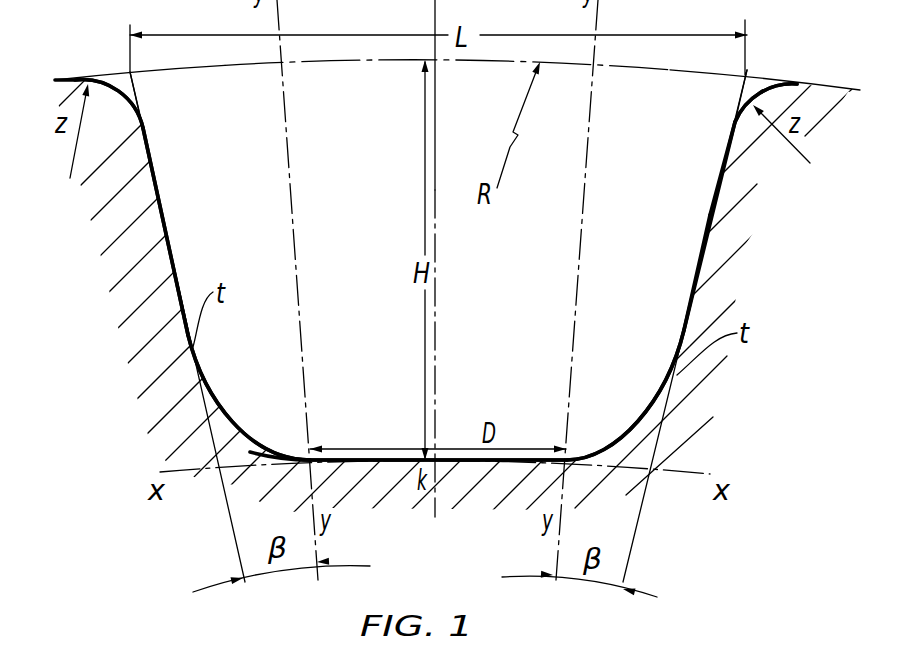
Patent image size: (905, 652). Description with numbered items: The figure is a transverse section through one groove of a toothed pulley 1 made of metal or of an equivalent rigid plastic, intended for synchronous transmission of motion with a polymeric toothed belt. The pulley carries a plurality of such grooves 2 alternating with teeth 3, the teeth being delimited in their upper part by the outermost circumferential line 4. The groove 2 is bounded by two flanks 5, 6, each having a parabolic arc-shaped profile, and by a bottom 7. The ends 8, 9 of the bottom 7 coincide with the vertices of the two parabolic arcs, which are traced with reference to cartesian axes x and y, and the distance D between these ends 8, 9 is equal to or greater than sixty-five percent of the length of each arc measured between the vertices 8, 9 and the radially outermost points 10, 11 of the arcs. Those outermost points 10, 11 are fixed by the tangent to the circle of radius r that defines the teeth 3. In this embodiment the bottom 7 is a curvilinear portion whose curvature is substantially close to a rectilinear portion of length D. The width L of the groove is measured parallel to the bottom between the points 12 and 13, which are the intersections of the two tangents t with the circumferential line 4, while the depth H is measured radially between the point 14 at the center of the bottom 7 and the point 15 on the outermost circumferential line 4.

The pulley 1 is at (620, 498).
The groove 2 is at (260, 215).
The teeth 3 is at (98, 100).
The circumferential line 4 is at (833, 95).
The flank 5 is at (682, 353).
The flank 6 is at (207, 372).
The bottom 7 is at (360, 460).
The end of the bottom 8 is at (570, 458).
The end of the bottom 9 is at (310, 458).
The radially outermost point 10 is at (733, 125).
The radially outermost point 11 is at (143, 128).
The point 12 is at (128, 72).
The point 13 is at (747, 70).
The point 14 is at (423, 64).
The point 15 is at (437, 460).